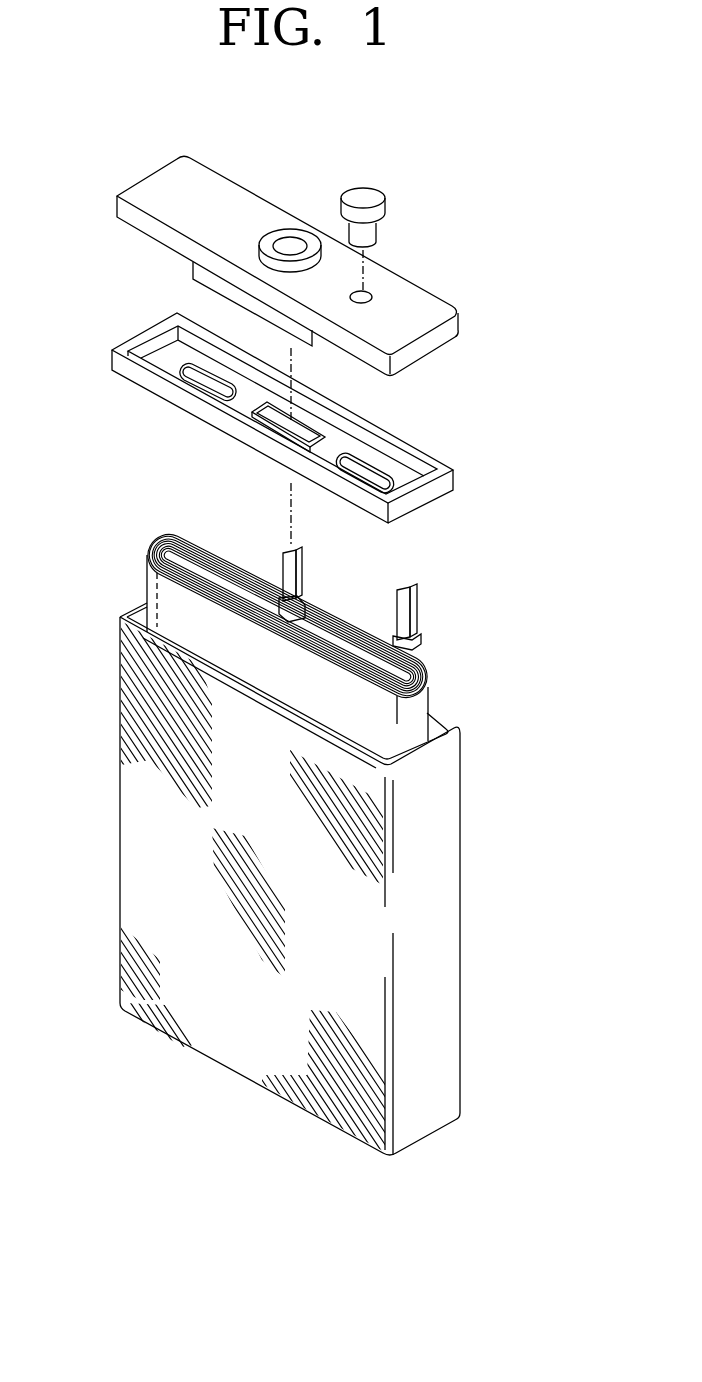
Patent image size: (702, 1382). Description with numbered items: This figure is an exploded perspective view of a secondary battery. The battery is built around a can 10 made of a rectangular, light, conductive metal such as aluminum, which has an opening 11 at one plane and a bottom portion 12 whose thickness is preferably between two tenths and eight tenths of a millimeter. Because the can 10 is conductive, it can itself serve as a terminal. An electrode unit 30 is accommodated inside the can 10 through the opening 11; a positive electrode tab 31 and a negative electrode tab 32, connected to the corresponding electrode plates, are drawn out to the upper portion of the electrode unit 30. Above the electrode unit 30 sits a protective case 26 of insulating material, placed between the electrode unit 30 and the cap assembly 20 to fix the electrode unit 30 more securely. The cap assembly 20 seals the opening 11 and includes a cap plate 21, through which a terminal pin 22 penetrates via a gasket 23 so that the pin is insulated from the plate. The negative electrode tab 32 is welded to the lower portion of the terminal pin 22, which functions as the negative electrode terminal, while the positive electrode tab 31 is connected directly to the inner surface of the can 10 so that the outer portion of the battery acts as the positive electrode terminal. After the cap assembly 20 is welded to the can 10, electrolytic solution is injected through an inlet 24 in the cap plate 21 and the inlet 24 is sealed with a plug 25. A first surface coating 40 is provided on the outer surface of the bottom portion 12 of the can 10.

The can 10 is at (445, 888).
The opening 11 is at (447, 720).
The bottom portion 12 is at (250, 1057).
The cap assembly 20 is at (462, 212).
The cap plate 21 is at (152, 180).
The terminal pin 22 is at (292, 242).
The gasket 23 is at (273, 237).
The inlet 24 is at (372, 292).
The plug 25 is at (367, 191).
The protective case 26 is at (433, 458).
The electrode unit 30 is at (143, 601).
The positive electrode tab 31 is at (413, 589).
The negative electrode tab 32 is at (286, 551).
The first surface coating 40 is at (412, 1183).